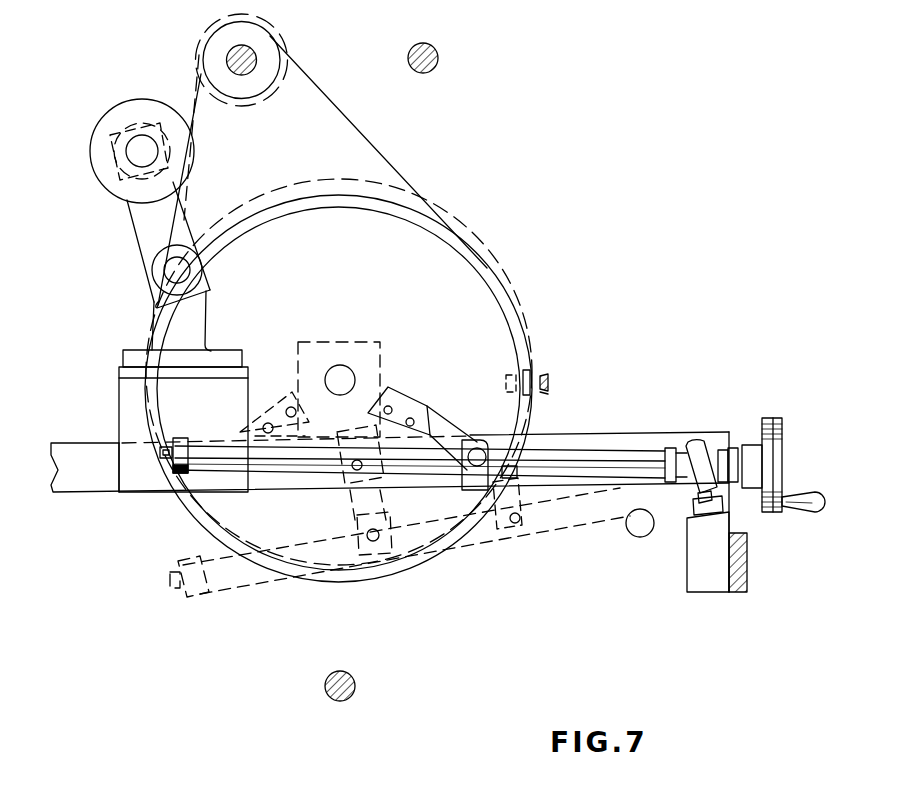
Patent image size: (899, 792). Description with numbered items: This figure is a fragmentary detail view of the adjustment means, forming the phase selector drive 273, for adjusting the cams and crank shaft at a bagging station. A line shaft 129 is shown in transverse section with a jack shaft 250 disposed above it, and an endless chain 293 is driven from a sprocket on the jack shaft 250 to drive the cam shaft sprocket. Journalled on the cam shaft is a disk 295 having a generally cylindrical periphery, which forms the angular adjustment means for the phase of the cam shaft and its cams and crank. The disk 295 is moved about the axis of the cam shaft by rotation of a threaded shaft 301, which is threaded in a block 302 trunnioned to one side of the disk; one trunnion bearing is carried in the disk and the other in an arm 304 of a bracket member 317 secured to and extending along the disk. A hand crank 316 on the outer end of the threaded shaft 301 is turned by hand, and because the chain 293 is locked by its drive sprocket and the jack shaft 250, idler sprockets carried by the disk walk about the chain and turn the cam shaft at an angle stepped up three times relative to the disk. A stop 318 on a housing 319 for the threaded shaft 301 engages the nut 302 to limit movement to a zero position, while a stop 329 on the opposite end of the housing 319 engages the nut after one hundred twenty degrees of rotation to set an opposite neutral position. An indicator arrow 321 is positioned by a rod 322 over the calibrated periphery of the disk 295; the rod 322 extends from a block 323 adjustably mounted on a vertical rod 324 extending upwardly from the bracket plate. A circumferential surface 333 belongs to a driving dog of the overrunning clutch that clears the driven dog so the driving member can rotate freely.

The jack shaft 250 is at (255, 51).
The endless chain 293 is at (358, 112).
The phase selector drive 273 is at (408, 174).
The disk 295 is at (455, 220).
The housing 319 is at (317, 424).
The bracket member 317 is at (401, 396).
The circumferential surface 333 is at (511, 376).
The vertical rod 324 is at (529, 380).
The indicator arrow 321 is at (544, 374).
The rod 322 is at (548, 394).
The arm 304 is at (476, 439).
The threaded shaft 301 is at (612, 457).
The block 302 is at (463, 489).
The stop 329 is at (183, 472).
The stop 318 is at (512, 476).
The block 323 is at (482, 497).
The hand crank 316 is at (815, 508).
The line shaft 129 is at (345, 703).